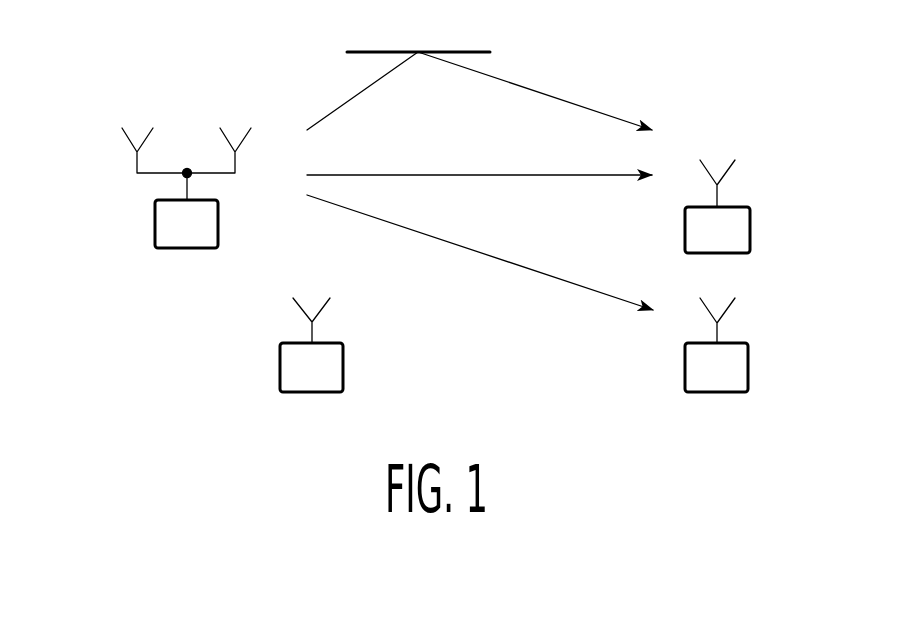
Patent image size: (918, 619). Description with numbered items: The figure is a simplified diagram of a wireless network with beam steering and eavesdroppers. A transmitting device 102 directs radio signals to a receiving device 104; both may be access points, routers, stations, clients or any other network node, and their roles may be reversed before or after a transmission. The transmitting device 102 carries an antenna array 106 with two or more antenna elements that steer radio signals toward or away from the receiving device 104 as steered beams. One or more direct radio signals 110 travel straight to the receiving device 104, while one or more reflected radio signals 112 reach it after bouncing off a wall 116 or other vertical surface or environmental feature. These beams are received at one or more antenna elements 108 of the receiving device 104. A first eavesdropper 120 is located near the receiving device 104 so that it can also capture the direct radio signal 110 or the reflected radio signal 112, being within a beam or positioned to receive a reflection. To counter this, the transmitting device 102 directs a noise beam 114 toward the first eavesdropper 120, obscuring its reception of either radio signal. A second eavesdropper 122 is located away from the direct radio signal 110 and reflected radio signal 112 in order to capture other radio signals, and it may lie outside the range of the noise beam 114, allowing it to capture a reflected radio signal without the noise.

The transmitting device 102 is at (155, 226).
The receiving device 104 is at (750, 212).
The antenna array 106 is at (180, 105).
The antenna elements 108 is at (718, 142).
The direct radio signal 110 is at (527, 175).
The reflected radio signal 112 is at (533, 93).
The noise beam 114 is at (507, 263).
The wall 116 is at (385, 50).
The first eavesdropper 120 is at (685, 368).
The second eavesdropper 122 is at (343, 365).